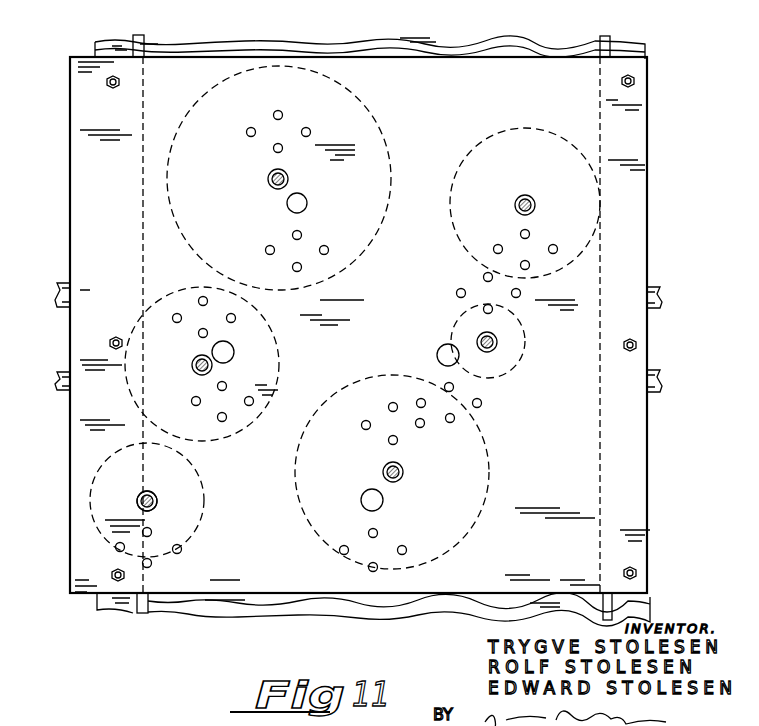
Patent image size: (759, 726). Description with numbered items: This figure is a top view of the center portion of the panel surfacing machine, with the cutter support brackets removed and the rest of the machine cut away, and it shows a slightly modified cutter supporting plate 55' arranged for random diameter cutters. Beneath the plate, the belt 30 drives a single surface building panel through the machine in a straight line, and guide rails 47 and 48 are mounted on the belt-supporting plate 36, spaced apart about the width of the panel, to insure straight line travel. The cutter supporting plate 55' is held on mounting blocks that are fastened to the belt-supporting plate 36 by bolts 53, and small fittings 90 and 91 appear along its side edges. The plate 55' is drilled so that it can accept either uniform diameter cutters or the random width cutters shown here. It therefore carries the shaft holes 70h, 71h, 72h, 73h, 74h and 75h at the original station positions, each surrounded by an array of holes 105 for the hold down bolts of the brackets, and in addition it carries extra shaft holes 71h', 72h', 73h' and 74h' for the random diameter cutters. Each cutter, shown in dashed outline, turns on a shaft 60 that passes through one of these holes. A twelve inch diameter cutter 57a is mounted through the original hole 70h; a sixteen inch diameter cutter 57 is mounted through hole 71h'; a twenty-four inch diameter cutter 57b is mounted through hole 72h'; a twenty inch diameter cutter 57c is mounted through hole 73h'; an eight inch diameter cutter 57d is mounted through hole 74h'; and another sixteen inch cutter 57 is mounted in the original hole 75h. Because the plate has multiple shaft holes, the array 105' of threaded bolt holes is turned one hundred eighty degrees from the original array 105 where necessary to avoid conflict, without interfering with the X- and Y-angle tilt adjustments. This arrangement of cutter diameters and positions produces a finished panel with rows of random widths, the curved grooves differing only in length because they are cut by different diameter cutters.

The belt 30 is at (378, 55).
The belt-supporting plate 36 is at (95, 44).
The guide rail 47 is at (138, 35).
The guide rail 48 is at (611, 38).
The bolts 53 is at (101, 82).
The cutter supporting plate 55' is at (379, 328).
The cutter 57 is at (450, 191).
The twelve inch diameter cutter 57a is at (204, 503).
The twenty-four inch diameter cutter 57b is at (385, 139).
The twenty inch diameter cutter 57c is at (490, 466).
The eight inch diameter cutter 57d is at (520, 322).
The shaft 60 is at (198, 372).
The shaft hole 70h is at (157, 508).
The shaft hole 71h is at (246, 360).
The shaft hole 71h' is at (181, 356).
The shaft hole 72h is at (322, 203).
The shaft hole 72h' is at (239, 193).
The shaft hole 73h is at (398, 505).
The shaft hole 73h' is at (419, 472).
The shaft hole 74h is at (420, 347).
The shaft hole 74h' is at (526, 343).
The shaft hole 75h is at (533, 197).
The bracket 90 is at (60, 387).
The bracket 91 is at (60, 291).
The array of holes 105 is at (376, 347).
The array of threaded holes 105' is at (288, 278).